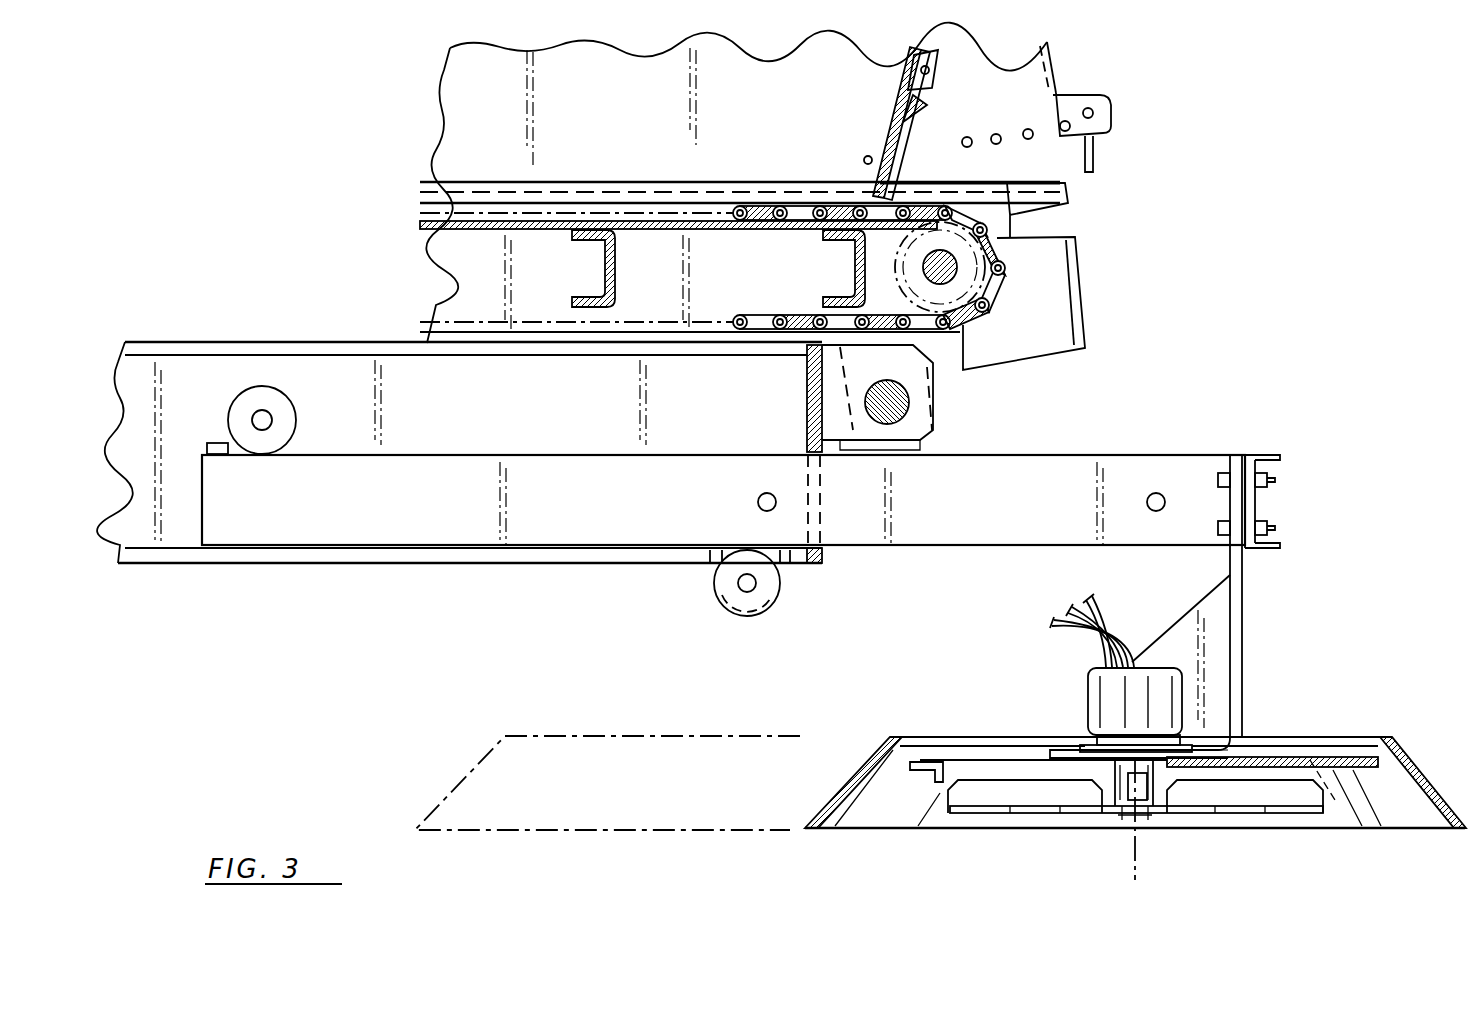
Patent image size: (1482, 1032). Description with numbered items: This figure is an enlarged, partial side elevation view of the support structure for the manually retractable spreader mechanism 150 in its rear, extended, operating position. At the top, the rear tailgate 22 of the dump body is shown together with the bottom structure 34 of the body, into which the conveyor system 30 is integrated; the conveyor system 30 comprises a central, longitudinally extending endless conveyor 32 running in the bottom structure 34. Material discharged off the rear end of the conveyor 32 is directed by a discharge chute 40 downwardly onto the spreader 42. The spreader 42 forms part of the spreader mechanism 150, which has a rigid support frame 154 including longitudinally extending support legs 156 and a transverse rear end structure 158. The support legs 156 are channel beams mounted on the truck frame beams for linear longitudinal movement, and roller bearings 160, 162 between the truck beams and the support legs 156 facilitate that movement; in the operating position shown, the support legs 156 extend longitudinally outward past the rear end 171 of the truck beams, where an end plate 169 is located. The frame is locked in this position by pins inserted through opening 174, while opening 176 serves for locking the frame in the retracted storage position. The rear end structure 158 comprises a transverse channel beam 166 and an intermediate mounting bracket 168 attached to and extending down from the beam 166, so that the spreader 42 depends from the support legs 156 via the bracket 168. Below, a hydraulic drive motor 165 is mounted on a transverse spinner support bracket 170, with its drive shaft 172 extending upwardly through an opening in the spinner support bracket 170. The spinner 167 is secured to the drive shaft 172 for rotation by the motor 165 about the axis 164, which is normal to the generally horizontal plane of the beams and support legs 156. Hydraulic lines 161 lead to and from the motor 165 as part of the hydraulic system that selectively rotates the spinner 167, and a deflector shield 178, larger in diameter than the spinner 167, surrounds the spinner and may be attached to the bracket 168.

The rear tailgate 22 is at (1058, 83).
The bottom structure 34 is at (688, 168).
The endless conveyor 32 is at (1000, 250).
The discharge chute 40 is at (1083, 290).
The conveyor system 30 is at (980, 321).
The roller bearing 160 is at (252, 392).
The end plate 169 is at (806, 394).
The support leg 156 is at (1008, 453).
The support frame 154 is at (1131, 444).
The transverse channel beam 166 is at (1258, 455).
The opening 176 is at (1150, 493).
The rear end structure 158 is at (1276, 533).
The opening 174 is at (762, 494).
The rear end of truck beam 171 is at (815, 565).
The roller bearing 162 is at (726, 606).
The hydraulic lines 161 is at (1094, 598).
The spinner support bracket 170 is at (1207, 600).
The mounting bracket 168 is at (1243, 610).
The spreader mechanism 150 is at (1306, 664).
The spreader 42 is at (1311, 727).
The hydraulic drive motor 165 is at (1098, 697).
The deflector shield 178 is at (1395, 756).
The spinner 167 is at (1000, 800).
The drive shaft 172 is at (1125, 771).
The axis of spinner rotation 164 is at (1137, 848).